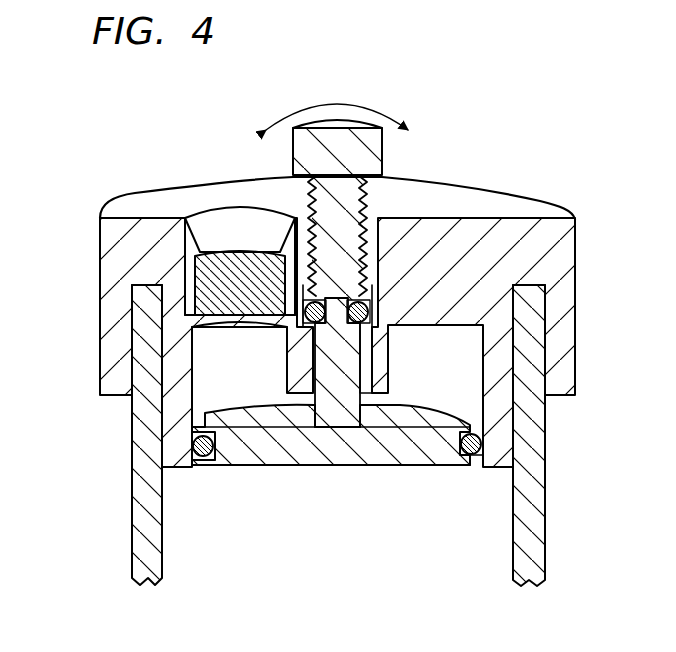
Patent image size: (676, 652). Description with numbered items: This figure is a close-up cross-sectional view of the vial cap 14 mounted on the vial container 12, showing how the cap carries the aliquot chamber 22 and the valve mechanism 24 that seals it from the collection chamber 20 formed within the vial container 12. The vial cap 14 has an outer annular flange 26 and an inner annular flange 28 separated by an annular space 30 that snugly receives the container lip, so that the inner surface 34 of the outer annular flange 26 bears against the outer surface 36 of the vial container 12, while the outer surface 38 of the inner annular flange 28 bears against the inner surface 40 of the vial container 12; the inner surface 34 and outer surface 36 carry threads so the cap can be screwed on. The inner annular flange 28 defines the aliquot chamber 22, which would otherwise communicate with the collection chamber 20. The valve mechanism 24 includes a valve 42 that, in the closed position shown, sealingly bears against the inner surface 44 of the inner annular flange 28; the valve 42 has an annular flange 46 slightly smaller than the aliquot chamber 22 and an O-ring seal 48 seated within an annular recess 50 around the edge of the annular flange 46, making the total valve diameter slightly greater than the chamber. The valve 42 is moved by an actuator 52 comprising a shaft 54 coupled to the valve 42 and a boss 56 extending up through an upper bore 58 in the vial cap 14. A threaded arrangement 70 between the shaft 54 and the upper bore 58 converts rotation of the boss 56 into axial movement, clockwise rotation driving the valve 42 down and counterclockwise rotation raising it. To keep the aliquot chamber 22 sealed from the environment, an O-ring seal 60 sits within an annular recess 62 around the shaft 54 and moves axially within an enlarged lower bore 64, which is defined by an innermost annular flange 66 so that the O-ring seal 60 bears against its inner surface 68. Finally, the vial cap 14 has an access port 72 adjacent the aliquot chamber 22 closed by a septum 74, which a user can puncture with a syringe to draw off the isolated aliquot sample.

The vial container 12 is at (545, 548).
The vial cap 14 is at (598, 151).
The collection chamber 20 is at (297, 560).
The aliquot chamber 22 is at (194, 390).
The valve mechanism 24 is at (303, 466).
The outer annular flange 26 is at (563, 350).
The inner annular flange 28 is at (494, 468).
The annular space 30 is at (538, 293).
The inner surface of the outer annular flange 34 is at (547, 322).
The outer surface of the vial container 36 is at (547, 441).
The outer surface of the inner annular flange 38 is at (462, 412).
The inner surface of the vial container 40 is at (513, 534).
The valve 42 is at (267, 466).
The inner surface of the inner annular flange 44 is at (207, 352).
The annular flange 46 is at (346, 455).
The O-ring seal 48 is at (203, 466).
The annular recess 50 is at (212, 458).
The actuator 52 is at (381, 152).
The shaft 54 is at (345, 226).
The boss 56 is at (295, 152).
The upper bore 58 is at (368, 214).
The O-ring seal 60 is at (287, 326).
The annular recess 62 is at (300, 358).
The lower bore 64 is at (362, 387).
The innermost annular flange 66 is at (396, 402).
The inner surface of the innermost annular flange 68 is at (373, 340).
The threaded arrangement 70 is at (378, 243).
The access port 72 is at (208, 232).
The septum 74 is at (217, 276).